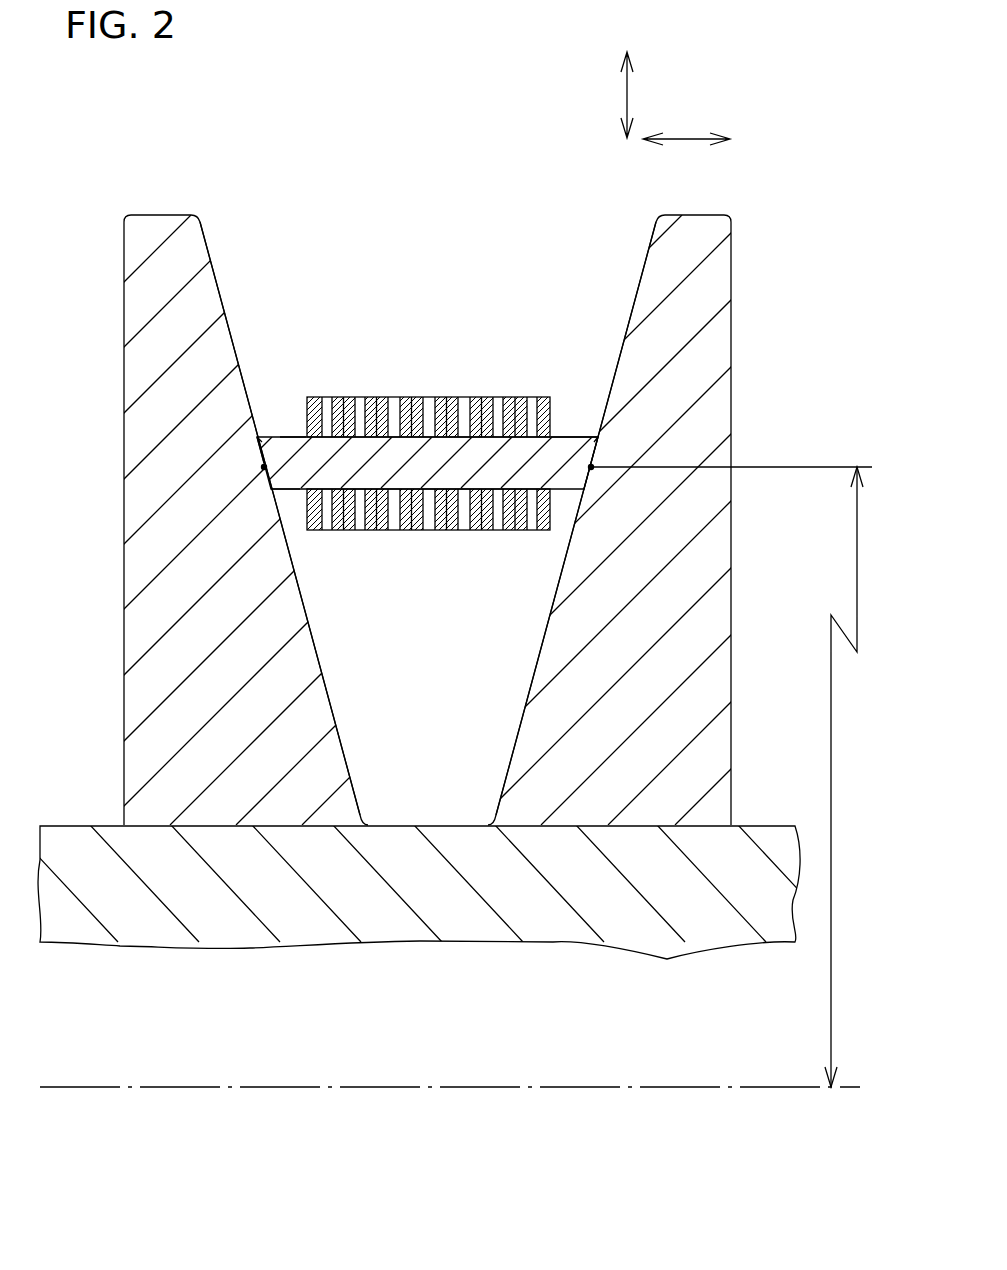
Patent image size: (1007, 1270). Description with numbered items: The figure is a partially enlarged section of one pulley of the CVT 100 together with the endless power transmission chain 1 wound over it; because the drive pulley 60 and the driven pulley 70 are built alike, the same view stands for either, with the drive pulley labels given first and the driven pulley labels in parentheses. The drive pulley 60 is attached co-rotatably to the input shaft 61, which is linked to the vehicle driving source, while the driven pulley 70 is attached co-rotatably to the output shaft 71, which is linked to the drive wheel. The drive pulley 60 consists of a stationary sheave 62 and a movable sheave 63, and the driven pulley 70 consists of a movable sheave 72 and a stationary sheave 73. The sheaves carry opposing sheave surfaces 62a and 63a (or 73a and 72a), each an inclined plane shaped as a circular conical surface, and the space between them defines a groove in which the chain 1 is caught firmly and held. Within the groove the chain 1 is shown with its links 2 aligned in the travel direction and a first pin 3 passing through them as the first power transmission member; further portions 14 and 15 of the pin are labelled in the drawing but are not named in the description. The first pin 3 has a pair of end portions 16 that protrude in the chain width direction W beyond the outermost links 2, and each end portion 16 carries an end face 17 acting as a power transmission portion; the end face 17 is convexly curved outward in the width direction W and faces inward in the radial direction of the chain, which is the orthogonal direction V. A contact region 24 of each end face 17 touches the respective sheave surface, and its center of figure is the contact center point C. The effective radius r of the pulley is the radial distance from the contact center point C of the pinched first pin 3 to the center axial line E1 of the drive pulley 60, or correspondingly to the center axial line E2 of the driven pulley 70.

The CVT 100 is at (489, 85).
The endless power transmission chain 1 is at (413, 365).
The link 2 is at (312, 396).
The first pin 3 is at (560, 437).
The end face of core plate 14 is at (272, 436).
The bottom surface of core plate 15 is at (276, 490).
The end portion 16 is at (297, 436).
The end face 17 is at (262, 442).
The contact region 24 is at (263, 470).
The drive pulley 60 is at (503, 561).
The driven pulley 70 is at (223, 149).
The input shaft 61 is at (428, 932).
The output shaft 71 is at (493, 928).
The stationary sheave 62 is at (488, 485).
The movable sheave 72 is at (136, 263).
The sheave surface 62a is at (280, 499).
The sheave surface 72a is at (215, 291).
The movable sheave 63 is at (539, 485).
The stationary sheave 73 is at (724, 263).
The sheave surface 63a is at (576, 499).
The sheave surface 73a is at (644, 291).
The contact center point C is at (264, 467).
The center axial line E1 is at (450, 1048).
The center axial line E2 is at (670, 1087).
The effective radius r is at (835, 777).
The orthogonal direction V is at (627, 100).
The chain width direction W is at (681, 139).